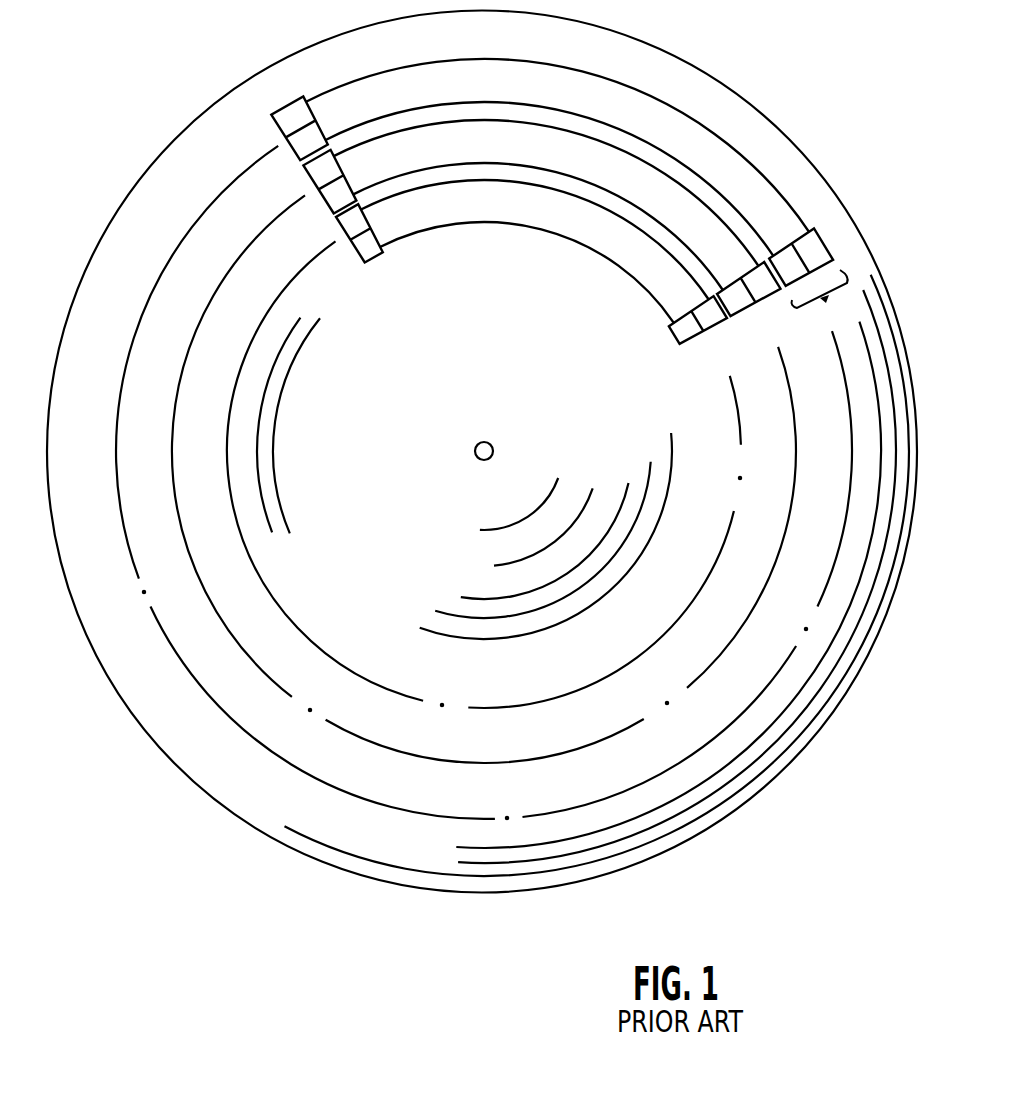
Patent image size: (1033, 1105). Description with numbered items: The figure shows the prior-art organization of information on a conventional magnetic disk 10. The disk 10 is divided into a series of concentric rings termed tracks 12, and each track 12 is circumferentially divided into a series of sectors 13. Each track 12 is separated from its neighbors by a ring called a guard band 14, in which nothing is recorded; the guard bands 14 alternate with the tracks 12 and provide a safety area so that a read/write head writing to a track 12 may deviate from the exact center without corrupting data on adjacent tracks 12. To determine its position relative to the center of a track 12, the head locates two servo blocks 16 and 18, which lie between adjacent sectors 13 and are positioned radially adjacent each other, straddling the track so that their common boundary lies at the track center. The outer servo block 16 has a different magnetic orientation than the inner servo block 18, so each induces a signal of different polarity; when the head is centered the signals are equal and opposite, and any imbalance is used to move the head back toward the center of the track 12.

The magnetic disk 10 is at (742, 68).
The track 12 is at (826, 302).
The sector 13 is at (316, 85).
The guard band 14 is at (622, 208).
The outer servo block 16 is at (818, 254).
The inner servo block 18 is at (790, 272).